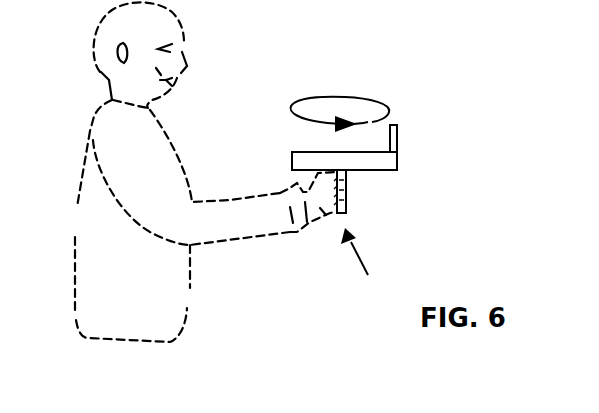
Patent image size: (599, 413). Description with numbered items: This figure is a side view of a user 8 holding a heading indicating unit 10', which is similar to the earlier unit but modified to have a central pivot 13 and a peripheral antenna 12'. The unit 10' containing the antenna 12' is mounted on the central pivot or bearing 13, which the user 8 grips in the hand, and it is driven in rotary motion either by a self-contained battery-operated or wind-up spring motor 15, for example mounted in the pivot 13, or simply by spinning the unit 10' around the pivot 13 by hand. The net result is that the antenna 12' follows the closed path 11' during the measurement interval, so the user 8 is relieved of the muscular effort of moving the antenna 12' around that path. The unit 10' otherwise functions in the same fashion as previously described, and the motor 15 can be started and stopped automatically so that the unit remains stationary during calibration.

The user 8 is at (112, 314).
The unit 10' is at (367, 184).
The path 11' is at (340, 98).
The peripheral antenna 12' is at (427, 121).
The central pivot 13 is at (349, 183).
The motor 15 is at (365, 263).